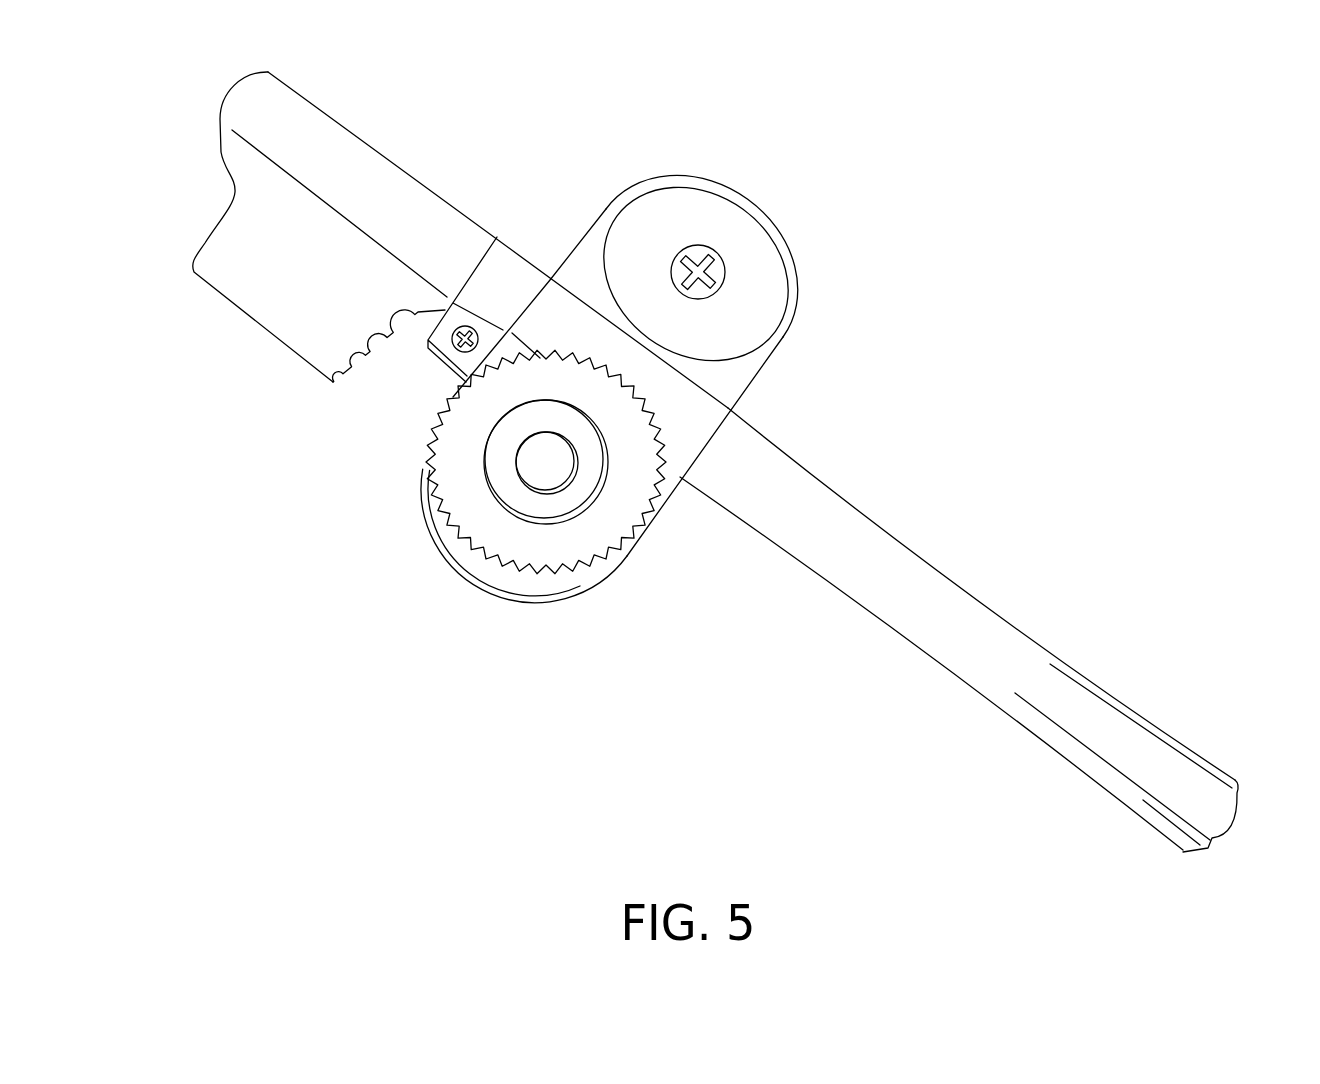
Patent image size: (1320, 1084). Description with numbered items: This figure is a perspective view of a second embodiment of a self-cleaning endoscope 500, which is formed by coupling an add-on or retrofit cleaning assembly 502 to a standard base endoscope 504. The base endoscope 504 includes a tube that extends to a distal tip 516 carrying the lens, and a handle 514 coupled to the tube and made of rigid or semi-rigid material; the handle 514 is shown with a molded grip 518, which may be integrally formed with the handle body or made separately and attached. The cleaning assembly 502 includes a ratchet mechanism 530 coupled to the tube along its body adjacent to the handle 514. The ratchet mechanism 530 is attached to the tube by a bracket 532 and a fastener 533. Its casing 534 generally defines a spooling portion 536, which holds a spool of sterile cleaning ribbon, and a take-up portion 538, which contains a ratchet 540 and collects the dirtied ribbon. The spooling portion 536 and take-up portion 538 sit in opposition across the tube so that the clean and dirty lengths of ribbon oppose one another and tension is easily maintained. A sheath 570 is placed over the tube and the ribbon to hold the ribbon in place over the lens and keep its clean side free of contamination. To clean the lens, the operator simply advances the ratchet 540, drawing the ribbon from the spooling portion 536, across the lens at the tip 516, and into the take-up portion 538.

The self-cleaning endoscope 500 is at (912, 283).
The cleaning assembly 502 is at (786, 392).
The base endoscope 504 is at (403, 136).
The handle 514 is at (240, 217).
The tip 516 is at (1234, 744).
The molded grip 518 is at (340, 400).
The ratchet mechanism 530 is at (588, 234).
The bracket 532 is at (523, 256).
The fastener 533 is at (452, 348).
The casing 534 is at (800, 300).
The spooling portion 536 is at (744, 240).
The take-up portion 538 is at (588, 551).
The ratchet 540 is at (454, 479).
The sheath 570 is at (968, 618).